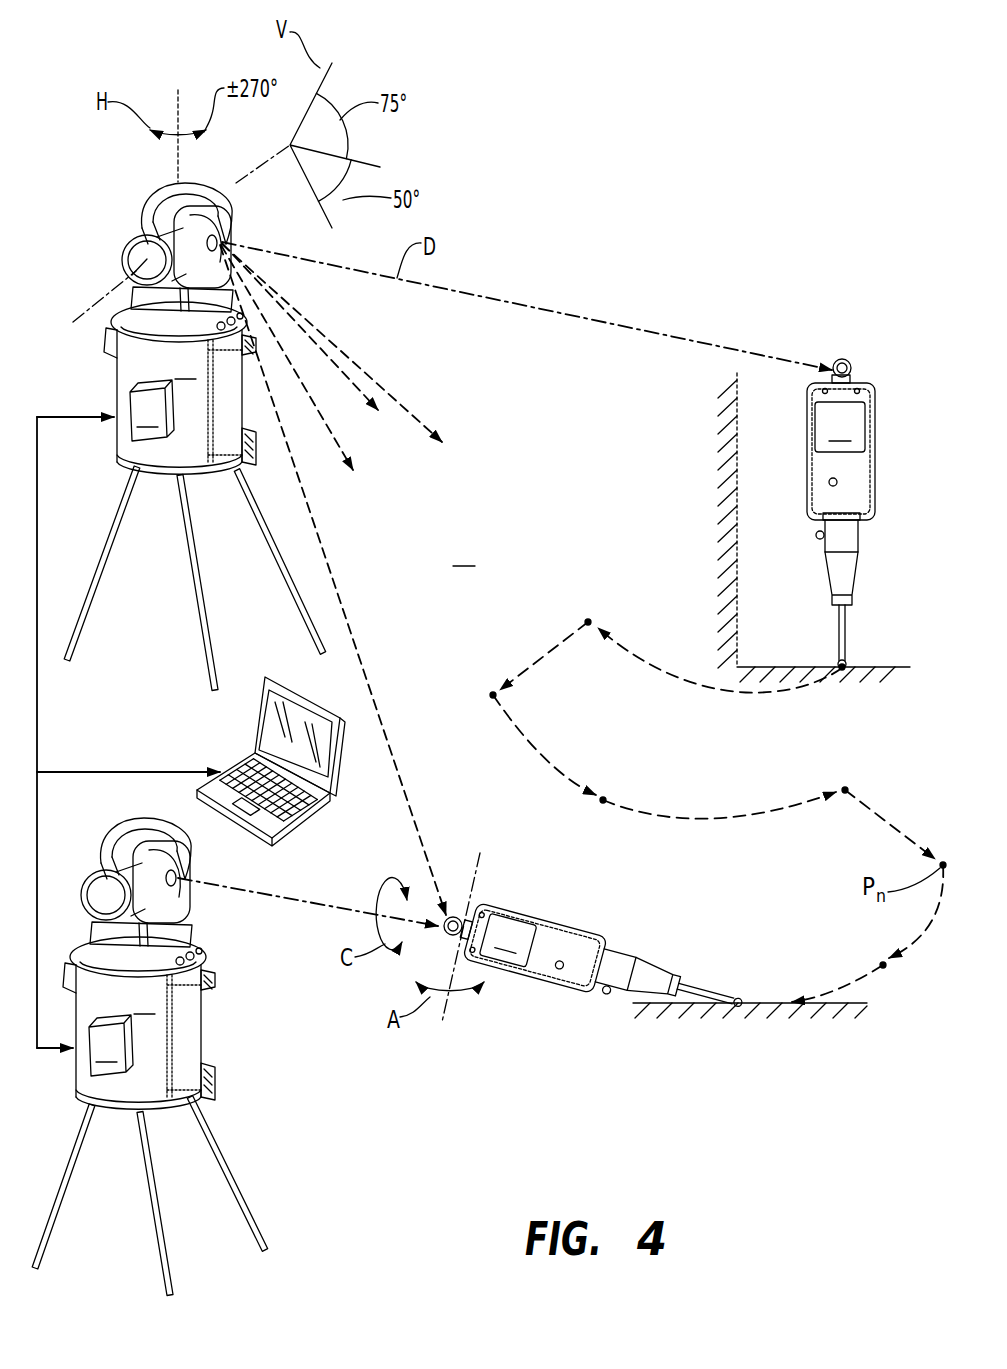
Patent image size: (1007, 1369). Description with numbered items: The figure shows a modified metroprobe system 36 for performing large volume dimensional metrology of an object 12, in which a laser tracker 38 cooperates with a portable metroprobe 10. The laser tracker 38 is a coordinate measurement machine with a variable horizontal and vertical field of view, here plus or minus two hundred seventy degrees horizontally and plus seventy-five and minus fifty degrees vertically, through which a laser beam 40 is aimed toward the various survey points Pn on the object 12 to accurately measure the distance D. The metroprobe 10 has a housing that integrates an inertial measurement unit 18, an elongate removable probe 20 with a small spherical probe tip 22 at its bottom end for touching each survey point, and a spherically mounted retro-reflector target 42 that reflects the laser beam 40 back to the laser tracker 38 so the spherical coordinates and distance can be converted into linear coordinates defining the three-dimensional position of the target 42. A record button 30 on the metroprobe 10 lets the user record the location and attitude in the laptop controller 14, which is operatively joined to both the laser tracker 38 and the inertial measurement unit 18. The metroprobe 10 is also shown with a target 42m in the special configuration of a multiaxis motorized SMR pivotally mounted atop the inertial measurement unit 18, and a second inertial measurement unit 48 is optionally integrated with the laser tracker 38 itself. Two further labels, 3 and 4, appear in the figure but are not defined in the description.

The first measurement point 3 is at (844, 672).
The measurement path 4 is at (588, 619).
The metroprobe 10 is at (860, 377).
The object 12 is at (882, 666).
The laptop controller 14 is at (293, 677).
The inertial measurement unit 18 is at (672, 684).
The probe 20 is at (838, 628).
The probe tip 22 is at (837, 664).
The record button 30 is at (828, 482).
The metroprobe system 36 is at (464, 554).
The laser tracker 38 is at (179, 739).
The laser beam 40 is at (510, 301).
The spherically mounted retro-reflector target 42 is at (834, 358).
The multiaxis motorized SMR target 42m is at (455, 916).
The second inertial measurement unit 48 is at (131, 728).